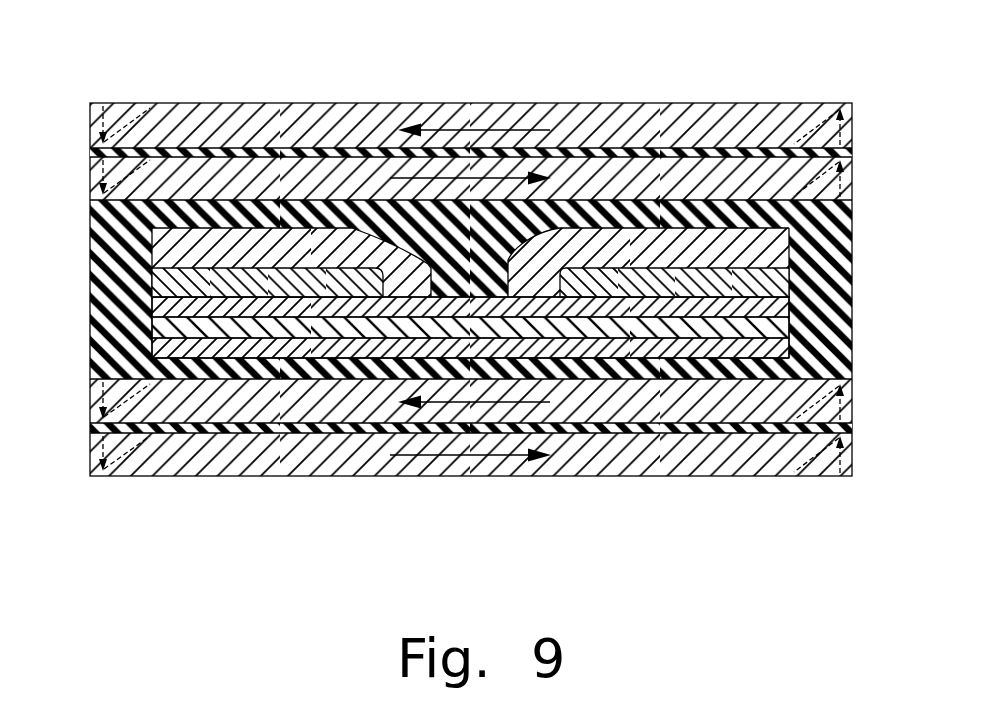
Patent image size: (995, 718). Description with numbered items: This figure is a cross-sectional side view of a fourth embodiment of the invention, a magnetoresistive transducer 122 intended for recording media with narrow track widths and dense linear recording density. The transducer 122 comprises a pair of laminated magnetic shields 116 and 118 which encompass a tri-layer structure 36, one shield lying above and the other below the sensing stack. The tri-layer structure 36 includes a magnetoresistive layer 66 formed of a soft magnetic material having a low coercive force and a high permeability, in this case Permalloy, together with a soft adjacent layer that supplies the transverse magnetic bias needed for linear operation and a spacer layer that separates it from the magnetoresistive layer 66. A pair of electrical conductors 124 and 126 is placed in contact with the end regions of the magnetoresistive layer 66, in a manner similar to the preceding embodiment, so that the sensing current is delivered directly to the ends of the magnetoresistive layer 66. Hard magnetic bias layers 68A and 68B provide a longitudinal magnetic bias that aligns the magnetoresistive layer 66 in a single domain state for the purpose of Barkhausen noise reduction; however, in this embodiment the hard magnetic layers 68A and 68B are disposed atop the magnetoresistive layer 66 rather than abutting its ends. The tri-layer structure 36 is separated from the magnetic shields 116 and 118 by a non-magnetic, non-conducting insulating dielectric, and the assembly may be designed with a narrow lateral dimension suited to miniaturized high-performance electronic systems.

The tri-layer structure 36 is at (803, 334).
The magnetoresistive layer 66 is at (165, 309).
The hard magnetic bias layer 68A is at (162, 282).
The hard magnetic bias layer 68B is at (775, 285).
The laminated magnetic shield 116 is at (693, 484).
The laminated magnetic shield 118 is at (713, 97).
The transducer 122 is at (884, 114).
The electrical conductor 124 is at (125, 248).
The electrical conductor 126 is at (765, 253).